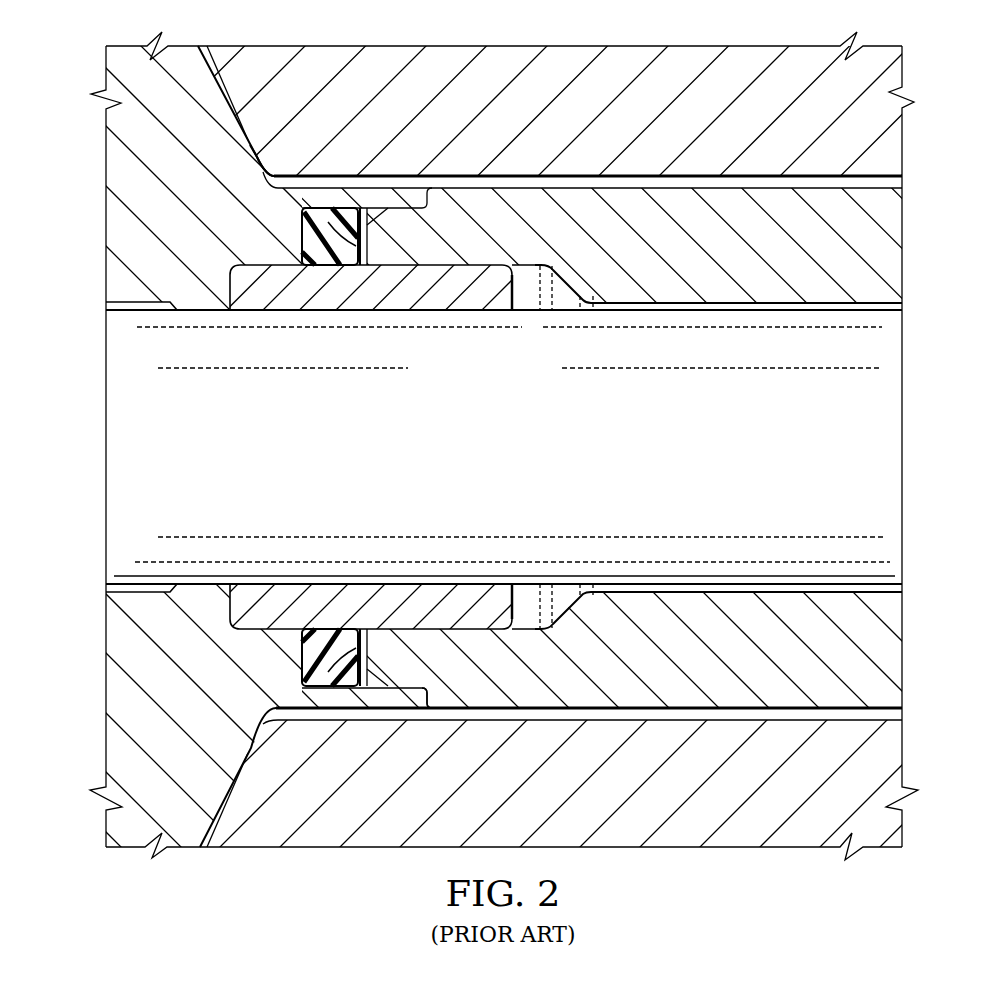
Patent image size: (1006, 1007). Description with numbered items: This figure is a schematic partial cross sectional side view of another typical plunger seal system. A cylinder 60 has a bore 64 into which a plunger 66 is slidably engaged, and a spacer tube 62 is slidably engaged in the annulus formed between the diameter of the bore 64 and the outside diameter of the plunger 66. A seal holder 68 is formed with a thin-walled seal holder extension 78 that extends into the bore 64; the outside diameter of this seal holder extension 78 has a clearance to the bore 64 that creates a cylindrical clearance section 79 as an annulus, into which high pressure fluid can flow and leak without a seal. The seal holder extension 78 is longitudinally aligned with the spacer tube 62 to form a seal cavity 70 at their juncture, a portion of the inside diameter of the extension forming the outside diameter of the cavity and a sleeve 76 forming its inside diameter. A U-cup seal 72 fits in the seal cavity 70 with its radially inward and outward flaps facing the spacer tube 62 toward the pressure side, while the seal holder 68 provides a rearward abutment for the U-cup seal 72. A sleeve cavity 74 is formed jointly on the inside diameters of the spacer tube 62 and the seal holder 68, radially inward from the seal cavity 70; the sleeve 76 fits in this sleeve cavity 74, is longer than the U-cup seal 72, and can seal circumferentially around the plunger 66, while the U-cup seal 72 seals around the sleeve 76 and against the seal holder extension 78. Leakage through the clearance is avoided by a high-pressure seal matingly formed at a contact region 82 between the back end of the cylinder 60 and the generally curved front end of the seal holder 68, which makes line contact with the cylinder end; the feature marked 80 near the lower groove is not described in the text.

The cylinder 60 is at (893, 155).
The spacer tube 62 is at (893, 232).
The bore 64 is at (736, 175).
The plunger 66 is at (893, 410).
The seal holder 68 is at (112, 162).
The seal cavity 70 is at (317, 213).
The U-cup seal 72 is at (362, 240).
The sleeve cavity 74 is at (527, 295).
The sleeve 76 is at (395, 305).
The seal holder extension 78 is at (373, 697).
The cylindrical clearance section 79 is at (862, 175).
The groove 80 is at (418, 712).
The contact region 82 is at (257, 163).